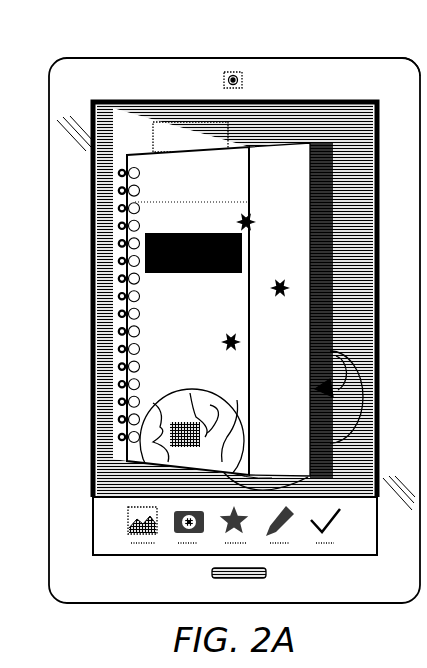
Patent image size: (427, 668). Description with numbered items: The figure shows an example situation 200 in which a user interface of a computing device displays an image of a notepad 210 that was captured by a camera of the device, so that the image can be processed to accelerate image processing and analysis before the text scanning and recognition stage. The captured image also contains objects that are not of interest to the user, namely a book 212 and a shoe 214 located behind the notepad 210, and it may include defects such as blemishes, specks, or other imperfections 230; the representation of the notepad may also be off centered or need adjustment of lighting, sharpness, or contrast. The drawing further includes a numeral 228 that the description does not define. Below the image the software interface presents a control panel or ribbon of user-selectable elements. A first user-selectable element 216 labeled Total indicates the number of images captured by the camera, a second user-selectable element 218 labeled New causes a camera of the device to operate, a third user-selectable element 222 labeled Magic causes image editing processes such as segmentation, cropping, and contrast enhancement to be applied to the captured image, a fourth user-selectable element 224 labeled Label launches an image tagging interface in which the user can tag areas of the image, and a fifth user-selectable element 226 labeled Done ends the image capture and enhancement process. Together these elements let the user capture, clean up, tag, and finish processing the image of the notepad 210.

The example situation 200 is at (80, 51).
The notepad 210 is at (276, 146).
The book 212 is at (142, 123).
The shoe 214 is at (362, 397).
The first user-selectable element 216 is at (128, 529).
The second user-selectable element 218 is at (174, 533).
The third user-selectable element 222 is at (226, 536).
The fourth user-selectable element 224 is at (290, 538).
The fifth user-selectable element 226 is at (333, 543).
The device housing 228 is at (411, 44).
The imperfections 230 is at (287, 284).